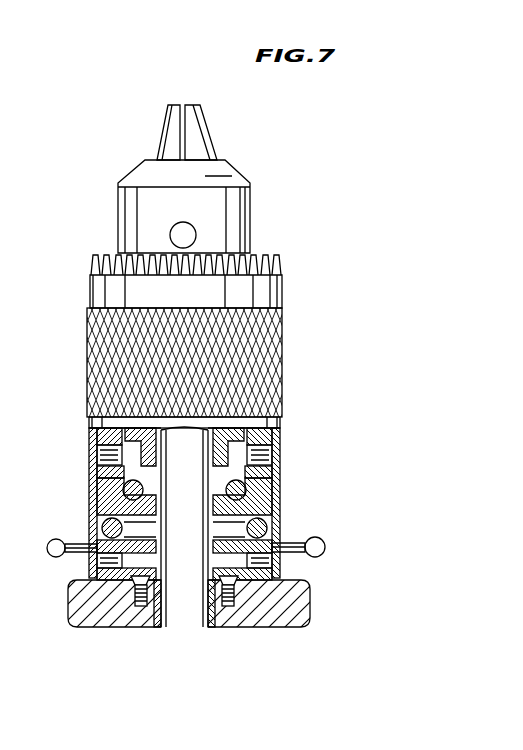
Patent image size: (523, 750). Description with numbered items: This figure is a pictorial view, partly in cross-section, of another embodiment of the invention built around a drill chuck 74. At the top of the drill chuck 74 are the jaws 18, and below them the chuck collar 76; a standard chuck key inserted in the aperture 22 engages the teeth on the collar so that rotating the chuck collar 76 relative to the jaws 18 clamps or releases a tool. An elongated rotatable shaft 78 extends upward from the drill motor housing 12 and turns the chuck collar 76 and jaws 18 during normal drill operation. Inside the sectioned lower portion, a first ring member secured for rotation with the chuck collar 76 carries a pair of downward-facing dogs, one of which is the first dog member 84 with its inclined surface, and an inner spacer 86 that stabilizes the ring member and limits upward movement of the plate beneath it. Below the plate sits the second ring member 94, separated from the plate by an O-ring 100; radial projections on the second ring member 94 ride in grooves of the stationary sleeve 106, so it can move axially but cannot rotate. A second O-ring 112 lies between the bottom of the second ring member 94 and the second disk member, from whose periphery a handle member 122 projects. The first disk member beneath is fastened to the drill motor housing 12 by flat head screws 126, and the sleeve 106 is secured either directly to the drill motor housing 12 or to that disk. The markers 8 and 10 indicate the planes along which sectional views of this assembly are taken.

The jaws 18 is at (203, 128).
The aperture 22 is at (197, 230).
The drill chuck 74 is at (315, 270).
The chuck collar 76 is at (88, 342).
The section line 8 is at (262, 381).
The section line 10 is at (53, 460).
The second ring member 94 is at (282, 516).
The inner spacer 86 is at (233, 437).
The first dog member 84 is at (98, 462).
The O-ring 100 is at (265, 490).
The O-ring 112 is at (90, 527).
The handle member 122 is at (326, 545).
The sleeve 106 is at (95, 568).
The drill motor housing 12 is at (72, 610).
The flat head screws 126 is at (237, 594).
The rotatable shaft 78 is at (178, 607).